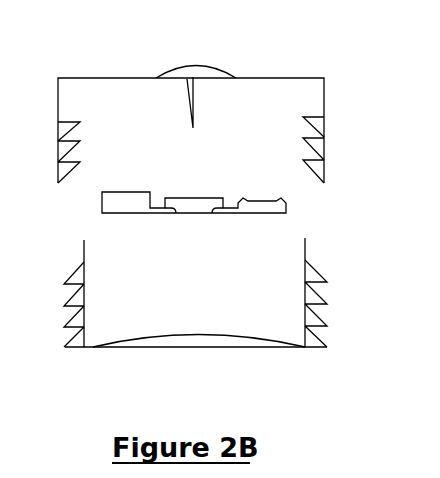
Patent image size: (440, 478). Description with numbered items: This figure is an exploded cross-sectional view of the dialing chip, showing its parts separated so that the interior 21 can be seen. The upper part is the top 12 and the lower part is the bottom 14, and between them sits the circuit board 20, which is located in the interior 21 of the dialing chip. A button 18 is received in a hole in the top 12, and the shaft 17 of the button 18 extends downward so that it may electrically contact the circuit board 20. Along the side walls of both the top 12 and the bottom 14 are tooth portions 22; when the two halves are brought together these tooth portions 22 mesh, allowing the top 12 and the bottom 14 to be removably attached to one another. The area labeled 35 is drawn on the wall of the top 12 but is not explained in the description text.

The top 12 is at (277, 75).
The bottom 14 is at (260, 347).
The shaft 17 is at (190, 82).
The button 18 is at (203, 70).
The circuit board 20 is at (286, 208).
The interior 21 is at (153, 282).
The tooth portions 22 is at (322, 125).
The housing wall 35 is at (285, 108).